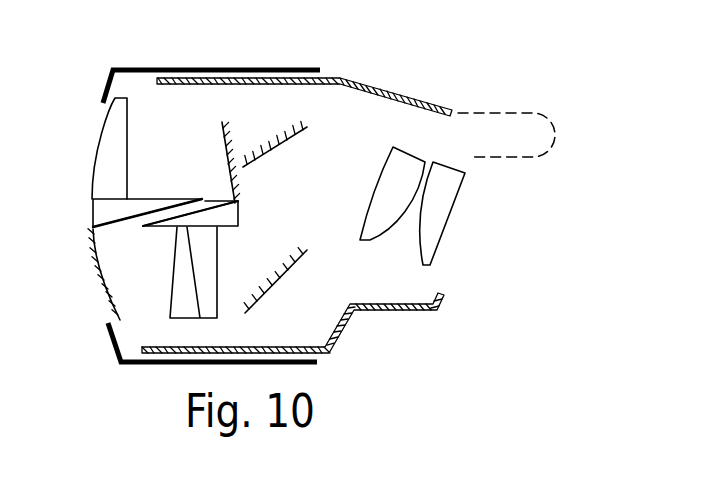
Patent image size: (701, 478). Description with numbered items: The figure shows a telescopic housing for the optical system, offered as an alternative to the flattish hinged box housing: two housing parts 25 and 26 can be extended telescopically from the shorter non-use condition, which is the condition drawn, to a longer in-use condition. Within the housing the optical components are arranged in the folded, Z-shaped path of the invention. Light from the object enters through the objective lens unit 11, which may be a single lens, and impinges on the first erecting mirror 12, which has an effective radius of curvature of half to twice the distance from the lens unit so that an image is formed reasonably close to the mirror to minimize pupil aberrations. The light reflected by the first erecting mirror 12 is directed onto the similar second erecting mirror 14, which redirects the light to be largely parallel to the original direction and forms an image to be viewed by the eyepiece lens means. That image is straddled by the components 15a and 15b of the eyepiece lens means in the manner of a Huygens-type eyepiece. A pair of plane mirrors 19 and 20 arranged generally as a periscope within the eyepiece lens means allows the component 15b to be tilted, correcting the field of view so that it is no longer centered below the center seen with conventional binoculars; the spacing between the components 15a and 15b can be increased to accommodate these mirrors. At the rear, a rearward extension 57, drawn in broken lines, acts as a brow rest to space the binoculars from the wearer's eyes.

The objective lens unit 11 is at (115, 130).
The first erecting mirror 12 is at (236, 117).
The second erecting mirror 14 is at (103, 272).
The component of the eyepiece lens means 15a is at (206, 277).
The component of the eyepiece lens means 15b is at (429, 214).
The plane mirror 19 is at (269, 290).
The plane mirror 20 is at (276, 146).
The housing part 25 is at (151, 67).
The housing part 26 is at (378, 312).
The rearward extension 57 is at (540, 113).